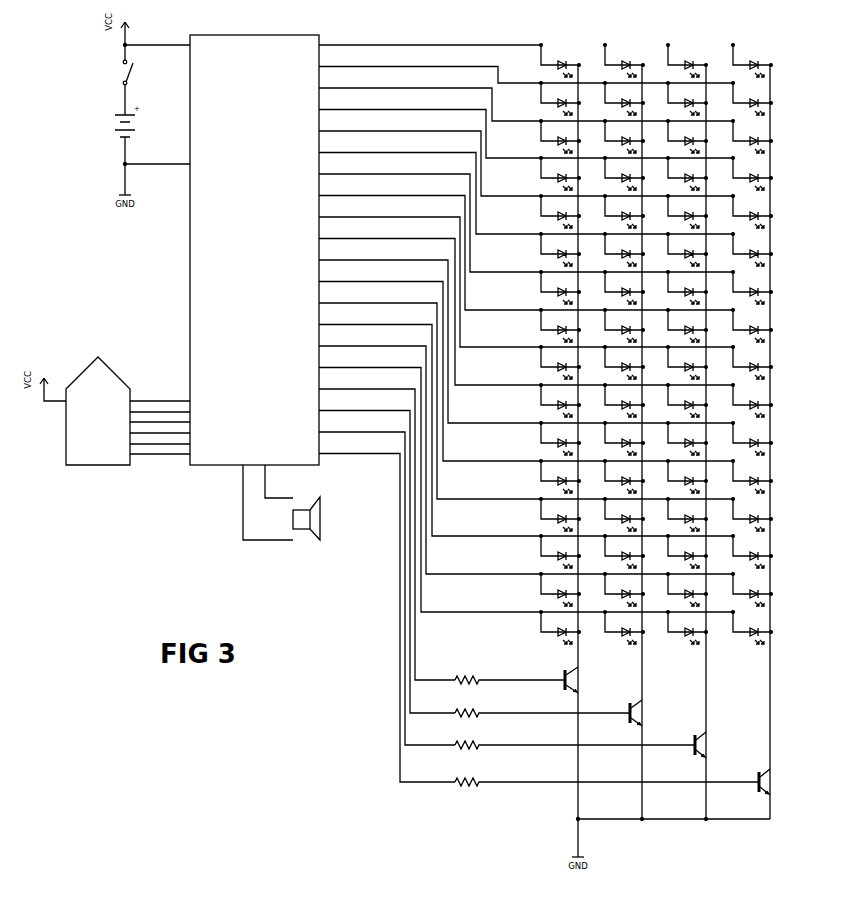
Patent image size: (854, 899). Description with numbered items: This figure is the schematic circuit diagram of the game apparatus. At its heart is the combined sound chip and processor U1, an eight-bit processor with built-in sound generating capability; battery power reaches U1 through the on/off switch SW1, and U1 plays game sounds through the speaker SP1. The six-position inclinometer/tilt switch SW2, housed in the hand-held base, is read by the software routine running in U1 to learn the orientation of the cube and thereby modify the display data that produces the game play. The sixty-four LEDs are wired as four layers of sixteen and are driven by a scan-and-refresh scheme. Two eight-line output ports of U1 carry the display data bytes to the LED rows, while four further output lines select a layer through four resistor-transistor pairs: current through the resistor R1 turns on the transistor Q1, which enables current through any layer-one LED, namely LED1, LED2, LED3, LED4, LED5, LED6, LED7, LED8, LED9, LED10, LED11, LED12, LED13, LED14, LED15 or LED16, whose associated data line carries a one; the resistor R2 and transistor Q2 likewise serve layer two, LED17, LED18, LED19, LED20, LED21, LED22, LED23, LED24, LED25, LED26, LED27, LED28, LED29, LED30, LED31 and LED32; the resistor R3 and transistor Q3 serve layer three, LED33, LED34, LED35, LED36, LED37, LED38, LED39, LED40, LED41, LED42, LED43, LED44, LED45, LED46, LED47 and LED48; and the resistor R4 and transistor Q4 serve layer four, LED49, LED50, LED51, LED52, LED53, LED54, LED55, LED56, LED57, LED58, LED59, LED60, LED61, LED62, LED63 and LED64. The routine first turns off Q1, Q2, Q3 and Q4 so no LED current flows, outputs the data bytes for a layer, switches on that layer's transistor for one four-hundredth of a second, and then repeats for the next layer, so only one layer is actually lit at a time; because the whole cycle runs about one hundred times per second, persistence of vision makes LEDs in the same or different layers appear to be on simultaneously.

The combined sound chip and processor U1 is at (248, 118).
The on/off switch SW1 is at (133, 72).
The inclinometer/tilt switch SW2 is at (98, 418).
The speaker SP1 is at (313, 518).
The resistor R1 is at (510, 680).
The resistor R2 is at (542, 713).
The resistor R3 is at (575, 745).
The resistor R4 is at (607, 782).
The transistor Q1 is at (588, 680).
The transistor Q2 is at (653, 713).
The transistor Q3 is at (717, 745).
The transistor Q4 is at (781, 782).
The Layer1 LED LED1 is at (560, 60).
The Layer1 LED LED2 is at (560, 98).
The Layer1 LED LED3 is at (560, 136).
The Layer1 LED LED4 is at (560, 173).
The Layer1 LED LED5 is at (560, 211).
The Layer1 LED LED6 is at (560, 249).
The Layer1 LED LED7 is at (560, 287).
The Layer1 LED LED8 is at (560, 325).
The Layer1 LED LED9 is at (560, 362).
The Layer1 LED LED10 is at (560, 400).
The Layer1 LED LED11 is at (560, 438).
The Layer1 LED LED12 is at (560, 476).
The Layer1 LED LED13 is at (560, 514).
The Layer1 LED LED14 is at (560, 551).
The Layer1 LED LED15 is at (560, 589).
The Layer1 LED LED16 is at (560, 627).
The Layer2 LED LED17 is at (624, 60).
The Layer2 LED LED18 is at (624, 98).
The Layer2 LED LED19 is at (624, 136).
The Layer2 LED LED20 is at (624, 173).
The Layer2 LED LED21 is at (624, 211).
The Layer2 LED LED22 is at (624, 249).
The Layer2 LED LED23 is at (624, 287).
The Layer2 LED LED24 is at (624, 325).
The Layer2 LED LED25 is at (624, 362).
The Layer2 LED LED26 is at (624, 400).
The Layer2 LED LED27 is at (624, 438).
The Layer2 LED LED28 is at (624, 476).
The Layer2 LED LED29 is at (624, 514).
The Layer2 LED LED30 is at (624, 551).
The Layer2 LED LED31 is at (624, 589).
The Layer2 LED LED32 is at (624, 627).
The Layer3 LED LED33 is at (687, 60).
The Layer3 LED LED34 is at (687, 98).
The Layer3 LED LED35 is at (687, 136).
The Layer3 LED LED36 is at (687, 173).
The Layer3 LED LED37 is at (687, 211).
The Layer3 LED LED38 is at (687, 249).
The Layer3 LED LED39 is at (687, 287).
The Layer3 LED LED40 is at (687, 325).
The Layer3 LED LED41 is at (687, 362).
The Layer3 LED LED42 is at (687, 400).
The Layer3 LED LED43 is at (687, 438).
The Layer3 LED LED44 is at (687, 476).
The Layer3 LED LED45 is at (687, 514).
The Layer3 LED LED46 is at (687, 551).
The Layer3 LED LED47 is at (687, 589).
The Layer3 LED LED48 is at (687, 627).
The Layer4 LED LED49 is at (752, 60).
The Layer4 LED LED50 is at (752, 98).
The Layer4 LED LED51 is at (752, 136).
The Layer4 LED LED52 is at (752, 173).
The Layer4 LED LED53 is at (752, 211).
The Layer4 LED LED54 is at (752, 249).
The Layer4 LED LED55 is at (752, 287).
The Layer4 LED LED56 is at (752, 325).
The Layer4 LED LED57 is at (752, 362).
The Layer4 LED LED58 is at (752, 400).
The Layer4 LED LED59 is at (752, 438).
The Layer4 LED LED60 is at (752, 476).
The Layer4 LED LED61 is at (752, 514).
The Layer4 LED LED62 is at (752, 551).
The Layer4 LED LED63 is at (752, 589).
The Layer4 LED LED64 is at (752, 627).